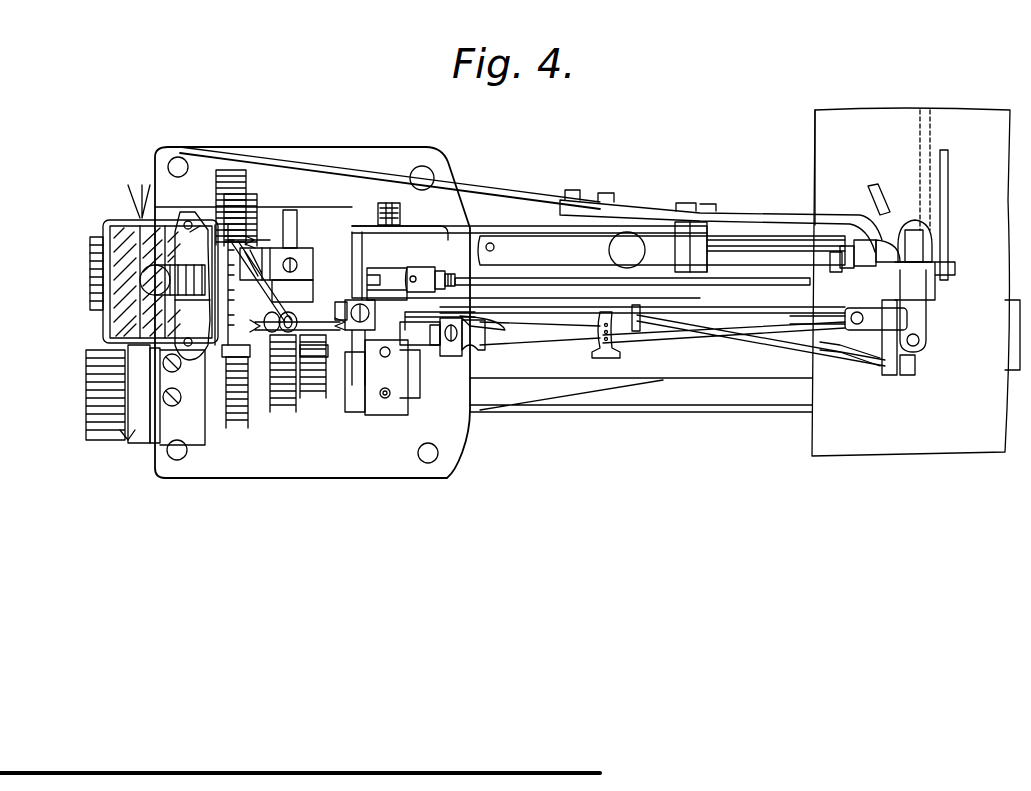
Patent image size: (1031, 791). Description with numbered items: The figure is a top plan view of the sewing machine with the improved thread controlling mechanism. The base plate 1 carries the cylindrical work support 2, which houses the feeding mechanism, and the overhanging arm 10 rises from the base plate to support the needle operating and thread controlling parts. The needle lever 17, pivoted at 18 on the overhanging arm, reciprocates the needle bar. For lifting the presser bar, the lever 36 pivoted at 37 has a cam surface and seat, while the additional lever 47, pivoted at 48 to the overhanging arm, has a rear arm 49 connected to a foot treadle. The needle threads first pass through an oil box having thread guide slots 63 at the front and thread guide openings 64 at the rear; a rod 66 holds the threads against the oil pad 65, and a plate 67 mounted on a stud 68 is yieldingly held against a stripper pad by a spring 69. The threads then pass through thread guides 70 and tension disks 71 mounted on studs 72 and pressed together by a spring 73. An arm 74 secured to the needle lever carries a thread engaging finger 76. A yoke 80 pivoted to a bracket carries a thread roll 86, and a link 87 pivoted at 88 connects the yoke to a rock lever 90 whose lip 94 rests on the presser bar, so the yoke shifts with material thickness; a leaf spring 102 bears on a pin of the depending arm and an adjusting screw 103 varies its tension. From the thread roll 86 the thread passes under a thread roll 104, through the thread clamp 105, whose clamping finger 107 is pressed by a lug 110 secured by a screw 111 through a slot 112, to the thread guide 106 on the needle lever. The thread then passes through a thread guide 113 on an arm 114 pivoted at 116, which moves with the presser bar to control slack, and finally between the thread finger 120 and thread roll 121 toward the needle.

The base plate 1 is at (368, 201).
The cylindrical work support 2 is at (710, 390).
The overhanging arm 10 is at (478, 273).
The needle lever 17 is at (704, 342).
The pivot of needle lever 18 is at (386, 412).
The lever 36 is at (916, 282).
The pivot of lever 37 is at (940, 292).
The lever 47 is at (742, 222).
The pivot of lever 48 is at (676, 249).
The arm 49 is at (506, 192).
The thread guide slots 63 is at (212, 228).
The thread guide openings 64 is at (150, 263).
The oil pad 65 is at (128, 312).
The rod 66 is at (140, 216).
The plate 67 is at (191, 286).
The stud 68 is at (185, 274).
The spring 69 is at (189, 302).
The thread guides 70 is at (308, 296).
The tension disks 71 is at (218, 385).
The studs 72 is at (292, 375).
The spring 73 is at (236, 368).
The arm 74 is at (376, 377).
The thread engaging finger 76 is at (428, 328).
The yoke 80 is at (356, 303).
The thread roll 86 is at (340, 304).
The link 87 is at (548, 284).
The pivot of link 88 is at (378, 296).
The rock lever 90 is at (892, 232).
The lip 94 is at (928, 300).
The leaf spring 102 is at (661, 250).
The adjusting screw 103 is at (628, 250).
The thread roll 104 is at (446, 368).
The thread clamp 105 is at (505, 340).
The thread guide 106 is at (590, 338).
The clamping finger 107 is at (485, 322).
The lug 110 is at (450, 352).
The screw 111 is at (470, 345).
The slot 112 is at (449, 359).
The thread guide 113 is at (636, 340).
The arm 114 is at (710, 316).
The pivot of arm 116 is at (806, 318).
The thread finger 120 is at (870, 366).
The thread roll 121 is at (893, 376).